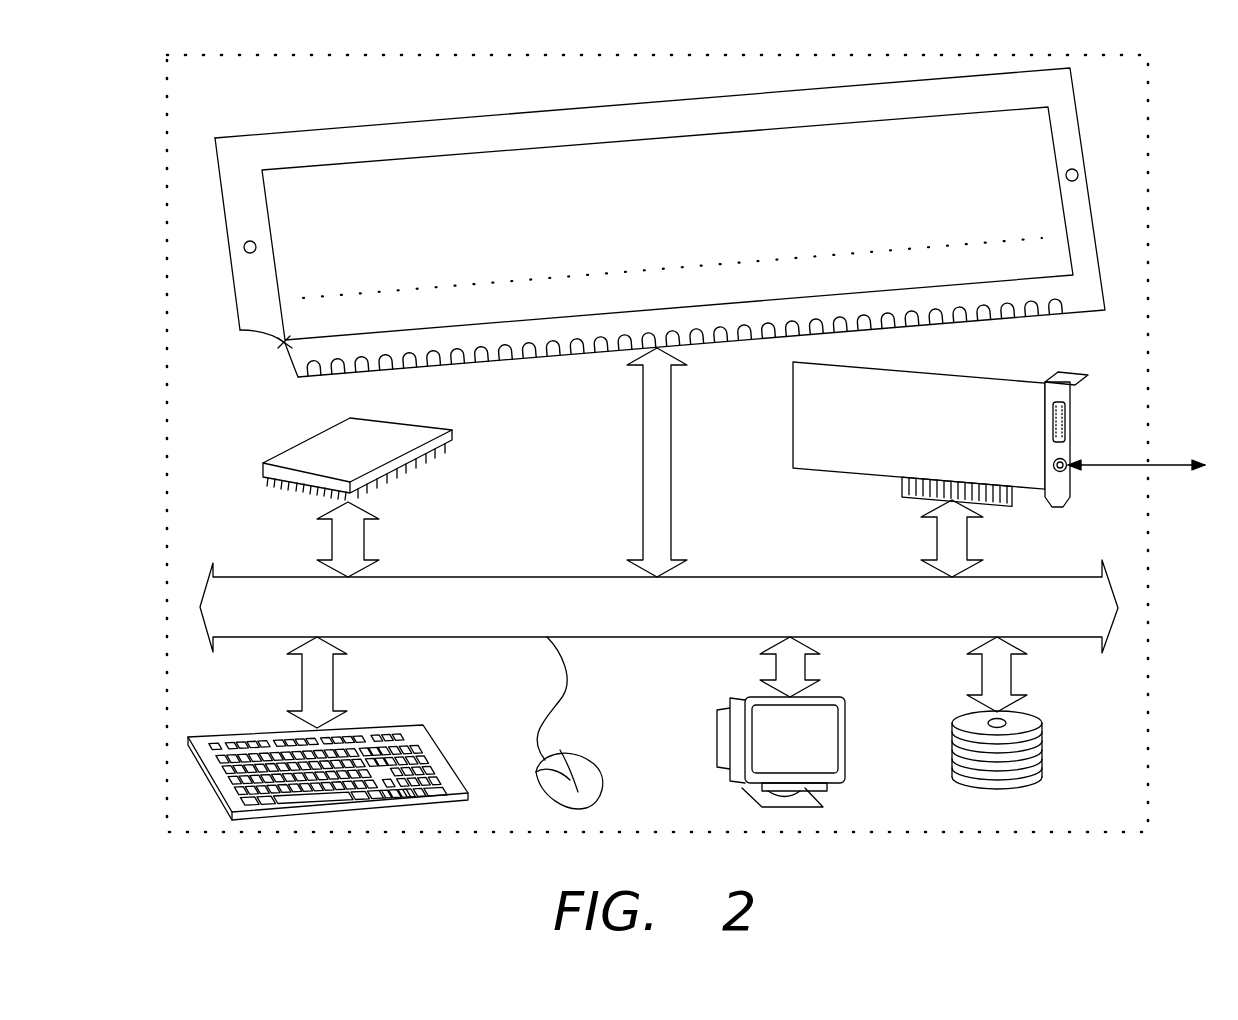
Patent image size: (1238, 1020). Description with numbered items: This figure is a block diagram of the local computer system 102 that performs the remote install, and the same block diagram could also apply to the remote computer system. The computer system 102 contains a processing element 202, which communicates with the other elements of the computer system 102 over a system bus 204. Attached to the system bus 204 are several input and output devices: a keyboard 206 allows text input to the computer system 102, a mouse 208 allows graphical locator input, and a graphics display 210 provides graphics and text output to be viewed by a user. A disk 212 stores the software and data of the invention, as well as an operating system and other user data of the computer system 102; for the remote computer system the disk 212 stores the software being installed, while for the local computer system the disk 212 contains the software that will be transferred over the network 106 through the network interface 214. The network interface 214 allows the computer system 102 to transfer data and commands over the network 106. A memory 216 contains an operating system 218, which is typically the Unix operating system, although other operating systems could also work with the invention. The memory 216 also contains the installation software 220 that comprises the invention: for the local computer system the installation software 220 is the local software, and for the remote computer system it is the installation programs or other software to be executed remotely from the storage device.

The local computer system 102 is at (296, 831).
The network 106 is at (1192, 442).
The processing element 202 is at (405, 424).
The system bus 204 is at (482, 577).
The keyboard 206 is at (416, 702).
The mouse 208 is at (590, 762).
The graphics display 210 is at (847, 735).
The disk 212 is at (1040, 720).
The network interface 214 is at (794, 430).
The memory 216 is at (510, 112).
The operating system 218 is at (281, 345).
The installation software 220 is at (284, 257).